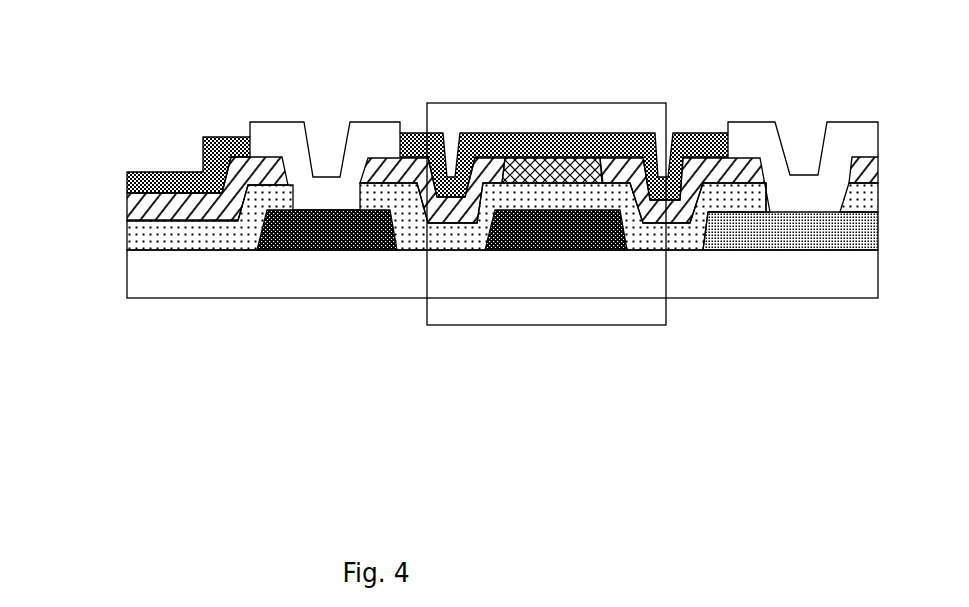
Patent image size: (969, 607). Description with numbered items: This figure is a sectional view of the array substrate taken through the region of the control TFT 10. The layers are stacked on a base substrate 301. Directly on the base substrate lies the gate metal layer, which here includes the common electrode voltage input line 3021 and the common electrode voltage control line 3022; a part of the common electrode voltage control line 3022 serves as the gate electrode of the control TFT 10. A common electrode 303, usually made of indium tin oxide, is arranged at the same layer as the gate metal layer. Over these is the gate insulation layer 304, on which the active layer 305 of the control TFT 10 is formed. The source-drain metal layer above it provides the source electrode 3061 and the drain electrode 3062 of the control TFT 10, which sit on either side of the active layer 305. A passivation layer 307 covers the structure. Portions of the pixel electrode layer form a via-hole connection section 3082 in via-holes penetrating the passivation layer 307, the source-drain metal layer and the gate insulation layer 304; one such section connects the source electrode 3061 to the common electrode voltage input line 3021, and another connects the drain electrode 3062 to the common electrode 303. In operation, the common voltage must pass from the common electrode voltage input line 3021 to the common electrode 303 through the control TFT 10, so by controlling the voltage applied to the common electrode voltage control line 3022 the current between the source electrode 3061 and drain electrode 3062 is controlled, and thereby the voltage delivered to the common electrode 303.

The control TFT 10 is at (667, 103).
The base substrate 301 is at (127, 277).
The common electrode voltage input line 3021 is at (335, 212).
The common electrode voltage control line 3022 is at (567, 213).
The common electrode 303 is at (792, 213).
The gate insulation layer 304 is at (127, 240).
The active layer 305 is at (555, 140).
The source electrode 3061 is at (484, 157).
The drain electrode 3062 is at (625, 157).
The passivation layer 307 is at (127, 180).
The via-hole connection section 3082 is at (267, 138).